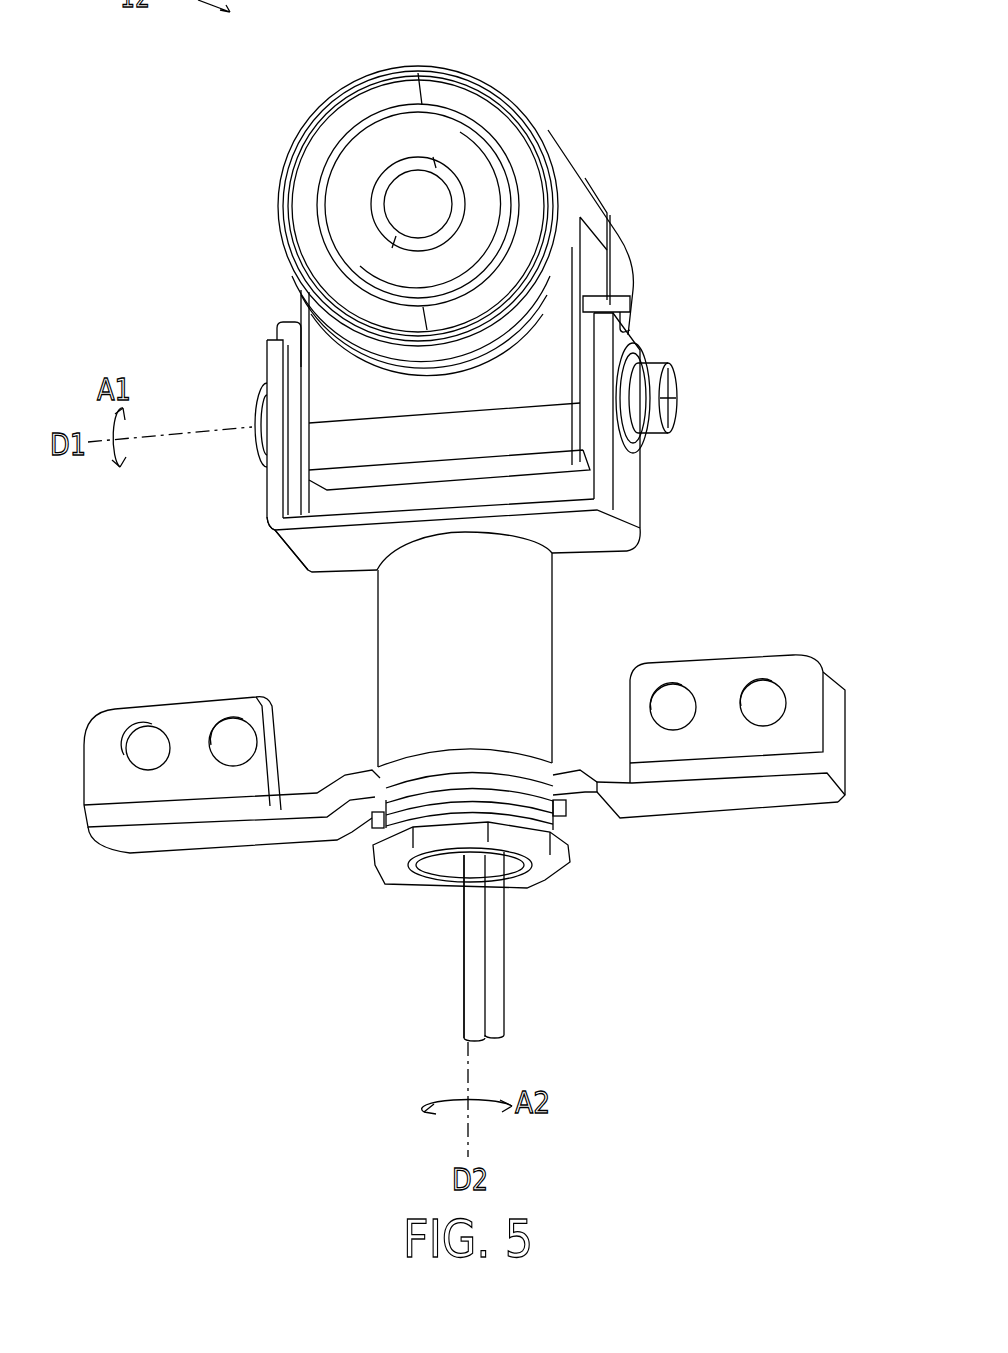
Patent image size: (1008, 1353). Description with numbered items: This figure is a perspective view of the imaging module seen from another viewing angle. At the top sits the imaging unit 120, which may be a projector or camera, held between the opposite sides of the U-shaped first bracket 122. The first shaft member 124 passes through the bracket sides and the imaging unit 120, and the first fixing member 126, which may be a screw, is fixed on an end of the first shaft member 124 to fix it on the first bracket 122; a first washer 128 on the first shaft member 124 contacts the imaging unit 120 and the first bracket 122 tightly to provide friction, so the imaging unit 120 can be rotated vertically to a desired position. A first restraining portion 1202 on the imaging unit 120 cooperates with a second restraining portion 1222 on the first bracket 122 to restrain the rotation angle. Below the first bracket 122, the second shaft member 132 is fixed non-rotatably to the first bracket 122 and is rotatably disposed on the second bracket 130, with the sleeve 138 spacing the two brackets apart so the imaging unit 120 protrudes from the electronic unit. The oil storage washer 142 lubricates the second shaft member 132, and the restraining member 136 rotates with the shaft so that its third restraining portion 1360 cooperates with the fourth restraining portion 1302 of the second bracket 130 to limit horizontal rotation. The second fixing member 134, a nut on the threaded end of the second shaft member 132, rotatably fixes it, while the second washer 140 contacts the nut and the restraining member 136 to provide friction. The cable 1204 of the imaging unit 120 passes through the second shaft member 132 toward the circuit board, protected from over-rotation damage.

The imaging unit 120 is at (480, 78).
The first restraining portion 1202 is at (290, 325).
The second restraining portion 1222 is at (266, 343).
The first shaft member 124 is at (257, 395).
The first bracket 122 is at (640, 480).
The second shaft member 132 is at (283, 516).
The first washer 128 is at (641, 350).
The first fixing member 126 is at (677, 392).
The sleeve 138 is at (553, 625).
The oil storage washer 142 is at (428, 758).
The restraining member 136 is at (545, 800).
The second bracket 130 is at (790, 655).
The fourth restraining portion 1302 is at (337, 820).
The third restraining portion 1360 is at (567, 815).
The second fixing member 134 is at (545, 850).
The second washer 140 is at (528, 875).
The cable 1204 is at (464, 968).